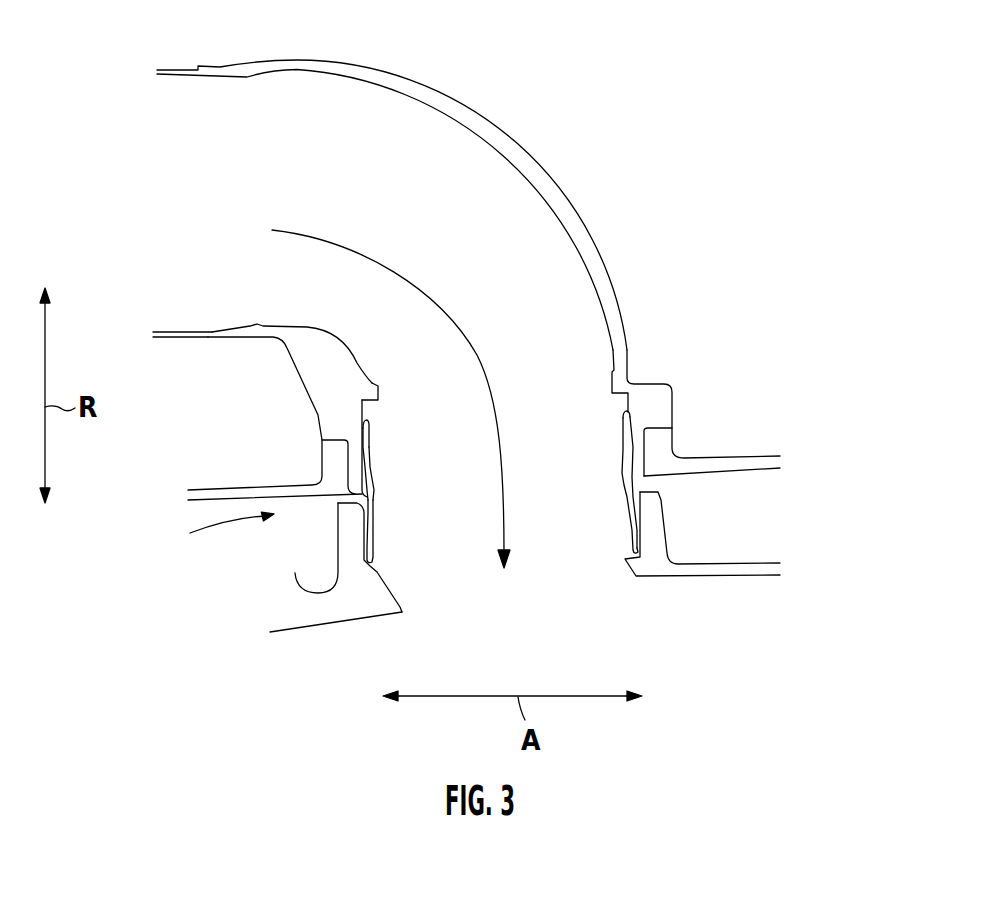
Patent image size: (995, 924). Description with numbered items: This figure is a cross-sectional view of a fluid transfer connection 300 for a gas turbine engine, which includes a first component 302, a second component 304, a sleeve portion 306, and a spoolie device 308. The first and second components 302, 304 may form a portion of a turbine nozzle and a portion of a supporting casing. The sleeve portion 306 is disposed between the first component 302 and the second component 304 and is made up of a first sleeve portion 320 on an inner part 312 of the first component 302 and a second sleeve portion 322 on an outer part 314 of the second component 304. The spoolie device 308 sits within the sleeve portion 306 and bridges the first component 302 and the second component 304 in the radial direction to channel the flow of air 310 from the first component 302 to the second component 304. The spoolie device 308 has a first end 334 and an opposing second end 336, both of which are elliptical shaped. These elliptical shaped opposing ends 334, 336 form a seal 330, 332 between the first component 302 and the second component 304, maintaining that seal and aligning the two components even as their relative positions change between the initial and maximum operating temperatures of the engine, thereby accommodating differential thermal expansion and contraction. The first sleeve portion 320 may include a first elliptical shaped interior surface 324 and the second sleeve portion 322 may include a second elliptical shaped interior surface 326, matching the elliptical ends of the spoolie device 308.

The fluid transfer connection 300 is at (656, 92).
The first component 302 is at (520, 143).
The second component 304 is at (288, 633).
The sleeve portion 306 is at (211, 533).
The spoolie device 308 is at (622, 481).
The flow of air 310 is at (390, 260).
The inner part 312 is at (325, 350).
The outer part 314 is at (337, 550).
The first sleeve portion 320 is at (340, 417).
The second sleeve portion 322 is at (352, 570).
The first elliptical shaped interior surface 324 is at (646, 452).
The second elliptical shaped interior surface 326 is at (655, 511).
The seal 330 is at (633, 424).
The seal 332 is at (640, 537).
The first end 334 is at (368, 430).
The second end 336 is at (370, 542).